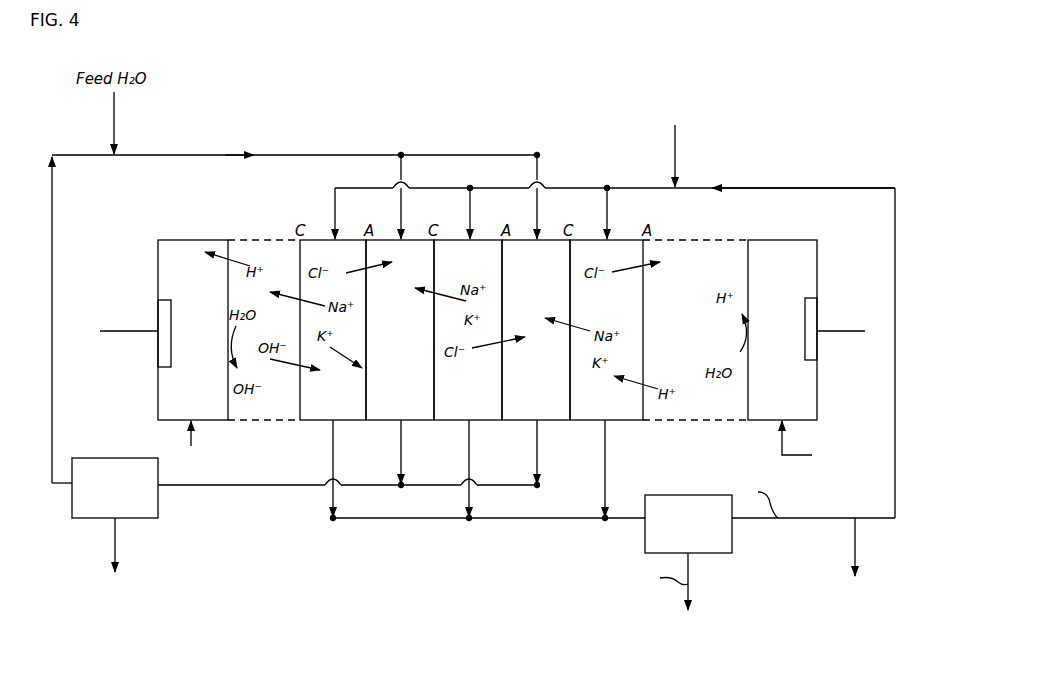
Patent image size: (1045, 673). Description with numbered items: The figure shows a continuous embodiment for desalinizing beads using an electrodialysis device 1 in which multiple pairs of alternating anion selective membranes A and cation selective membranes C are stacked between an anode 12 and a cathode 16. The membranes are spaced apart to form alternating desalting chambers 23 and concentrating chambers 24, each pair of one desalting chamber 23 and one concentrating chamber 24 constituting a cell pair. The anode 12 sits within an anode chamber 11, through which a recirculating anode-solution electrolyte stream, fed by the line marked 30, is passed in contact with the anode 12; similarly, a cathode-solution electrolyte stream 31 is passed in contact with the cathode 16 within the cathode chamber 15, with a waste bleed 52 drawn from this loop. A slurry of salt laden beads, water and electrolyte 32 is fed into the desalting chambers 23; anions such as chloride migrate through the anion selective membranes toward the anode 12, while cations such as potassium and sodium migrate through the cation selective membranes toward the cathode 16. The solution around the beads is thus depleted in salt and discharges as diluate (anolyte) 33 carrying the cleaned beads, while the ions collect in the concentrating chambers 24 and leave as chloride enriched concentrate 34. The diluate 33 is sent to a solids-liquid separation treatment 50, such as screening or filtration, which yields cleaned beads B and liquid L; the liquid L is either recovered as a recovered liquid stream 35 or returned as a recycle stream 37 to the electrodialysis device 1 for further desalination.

The electrodialysis device 1 is at (165, 213).
The anode chamber 11 is at (806, 330).
The anode 12 is at (815, 345).
The cathode chamber 15 is at (164, 330).
The cathode 16 is at (165, 341).
The desalting chamber 23 is at (471, 330).
The concentrating chamber 24 is at (468, 330).
The anode compartment feed line 30 is at (809, 443).
The cathode-solution electrolyte stream 31 is at (190, 448).
The salt laden bead slurry 32 is at (667, 121).
The diluate (anolyte) 33 is at (488, 496).
The chloride enriched concentrate 34 is at (241, 499).
The recovered liquid stream 35 is at (855, 545).
The recycle stream 37 is at (742, 188).
The solids-liquid separation treatment 50 is at (699, 573).
The waste bleed outlet 52 is at (136, 518).